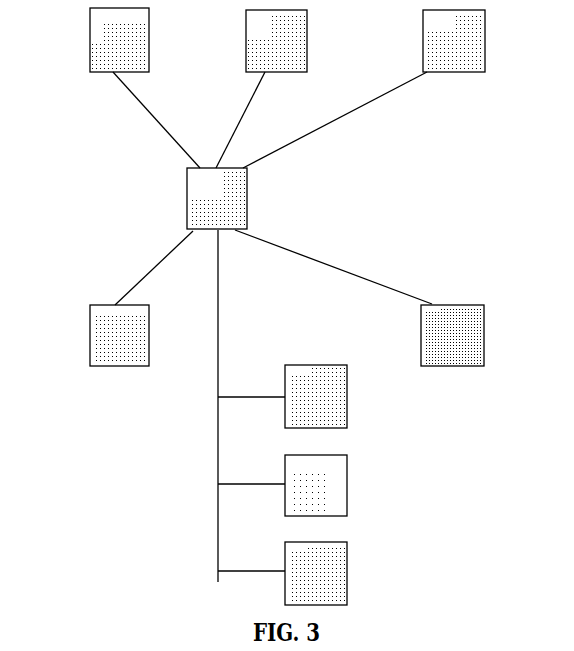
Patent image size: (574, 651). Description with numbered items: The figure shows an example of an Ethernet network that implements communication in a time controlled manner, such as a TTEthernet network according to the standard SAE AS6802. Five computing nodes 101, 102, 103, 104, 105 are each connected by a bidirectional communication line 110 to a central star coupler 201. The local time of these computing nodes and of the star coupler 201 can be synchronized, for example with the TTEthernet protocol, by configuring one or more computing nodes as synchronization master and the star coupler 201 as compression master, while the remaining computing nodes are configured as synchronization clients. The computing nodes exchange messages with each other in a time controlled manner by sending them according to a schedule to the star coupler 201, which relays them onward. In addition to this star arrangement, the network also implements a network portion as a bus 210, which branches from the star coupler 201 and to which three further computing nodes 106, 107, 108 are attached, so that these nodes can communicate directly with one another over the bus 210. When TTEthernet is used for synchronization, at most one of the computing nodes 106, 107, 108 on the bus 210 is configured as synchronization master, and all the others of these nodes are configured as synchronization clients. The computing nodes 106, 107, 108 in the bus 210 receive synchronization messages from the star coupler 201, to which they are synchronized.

The computing node 101 is at (86, 36).
The computing node 102 is at (244, 36).
The computing node 103 is at (421, 36).
The computing node 104 is at (487, 325).
The computing node 105 is at (88, 334).
The computing node 106 is at (349, 413).
The computing node 107 is at (348, 503).
The computing node 108 is at (348, 590).
The bidirectional communication line 110 is at (147, 121).
The star coupler 201 is at (186, 197).
The bus 210 is at (217, 374).